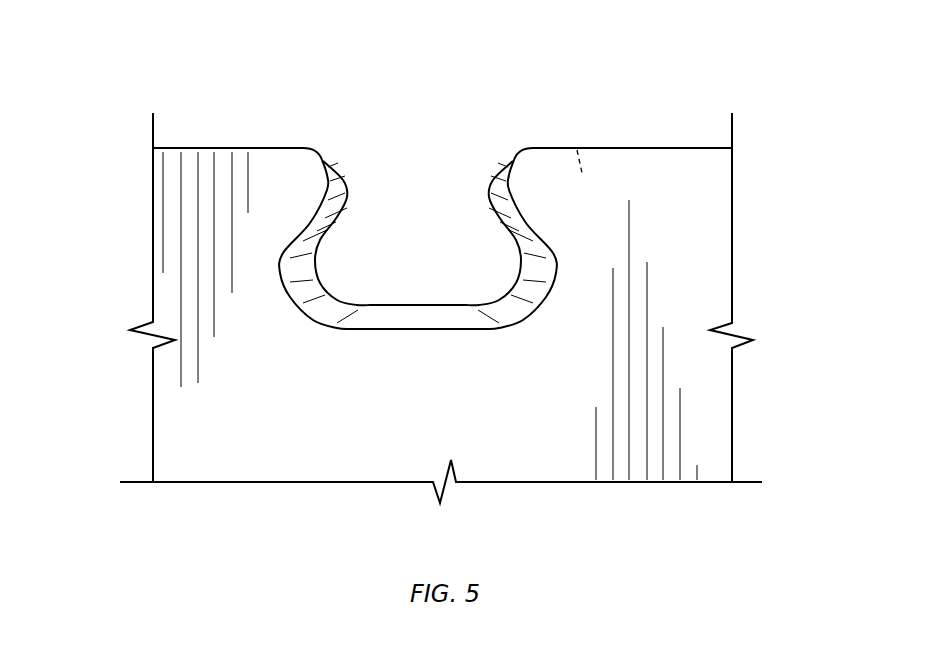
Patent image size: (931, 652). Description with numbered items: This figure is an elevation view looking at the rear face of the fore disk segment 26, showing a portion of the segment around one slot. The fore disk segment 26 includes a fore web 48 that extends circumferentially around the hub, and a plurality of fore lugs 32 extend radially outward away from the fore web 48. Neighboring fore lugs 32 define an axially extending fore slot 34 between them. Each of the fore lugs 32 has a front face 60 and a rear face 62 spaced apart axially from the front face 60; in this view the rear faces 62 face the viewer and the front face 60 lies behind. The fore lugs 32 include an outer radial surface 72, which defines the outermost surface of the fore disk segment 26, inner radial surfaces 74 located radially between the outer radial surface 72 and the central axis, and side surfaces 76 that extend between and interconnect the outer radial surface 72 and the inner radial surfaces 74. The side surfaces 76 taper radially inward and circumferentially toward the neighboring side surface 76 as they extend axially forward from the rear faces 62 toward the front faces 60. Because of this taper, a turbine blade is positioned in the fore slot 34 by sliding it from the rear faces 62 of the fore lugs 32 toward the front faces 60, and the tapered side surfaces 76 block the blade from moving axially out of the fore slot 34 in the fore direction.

The fore disk segment 26 is at (200, 95).
The fore lugs 32 is at (238, 188).
The fore slot 34 is at (418, 203).
The fore web 48 is at (318, 448).
The front faces 60 is at (578, 148).
The rear faces 62 is at (692, 220).
The outer radial surface 72 is at (277, 147).
The inner radial surfaces 74 is at (417, 317).
The side surfaces 76 is at (327, 222).